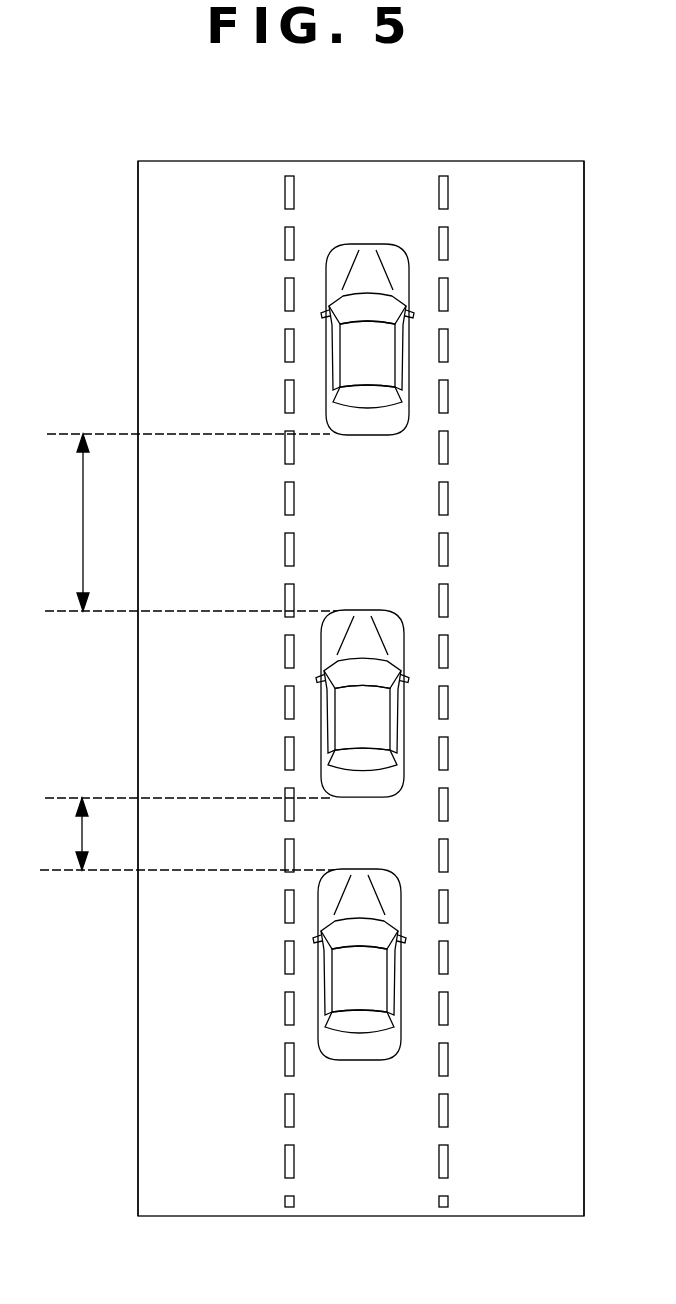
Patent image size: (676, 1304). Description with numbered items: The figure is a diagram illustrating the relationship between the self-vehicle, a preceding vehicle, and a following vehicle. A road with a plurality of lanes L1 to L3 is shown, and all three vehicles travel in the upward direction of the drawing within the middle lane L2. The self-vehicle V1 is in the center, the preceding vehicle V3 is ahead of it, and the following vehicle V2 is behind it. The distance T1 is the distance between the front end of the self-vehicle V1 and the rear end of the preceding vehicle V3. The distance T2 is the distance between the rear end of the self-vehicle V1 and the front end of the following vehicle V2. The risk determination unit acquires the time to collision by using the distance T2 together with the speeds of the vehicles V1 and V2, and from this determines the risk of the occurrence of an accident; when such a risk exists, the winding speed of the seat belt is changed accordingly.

The lane L1 is at (213, 160).
The lane L2 is at (365, 160).
The lane L3 is at (510, 160).
The self-vehicle V1 is at (404, 715).
The following vehicle V2 is at (402, 975).
The preceding vehicle V3 is at (409, 357).
The distance T1 is at (189, 522).
The distance T2 is at (183, 834).